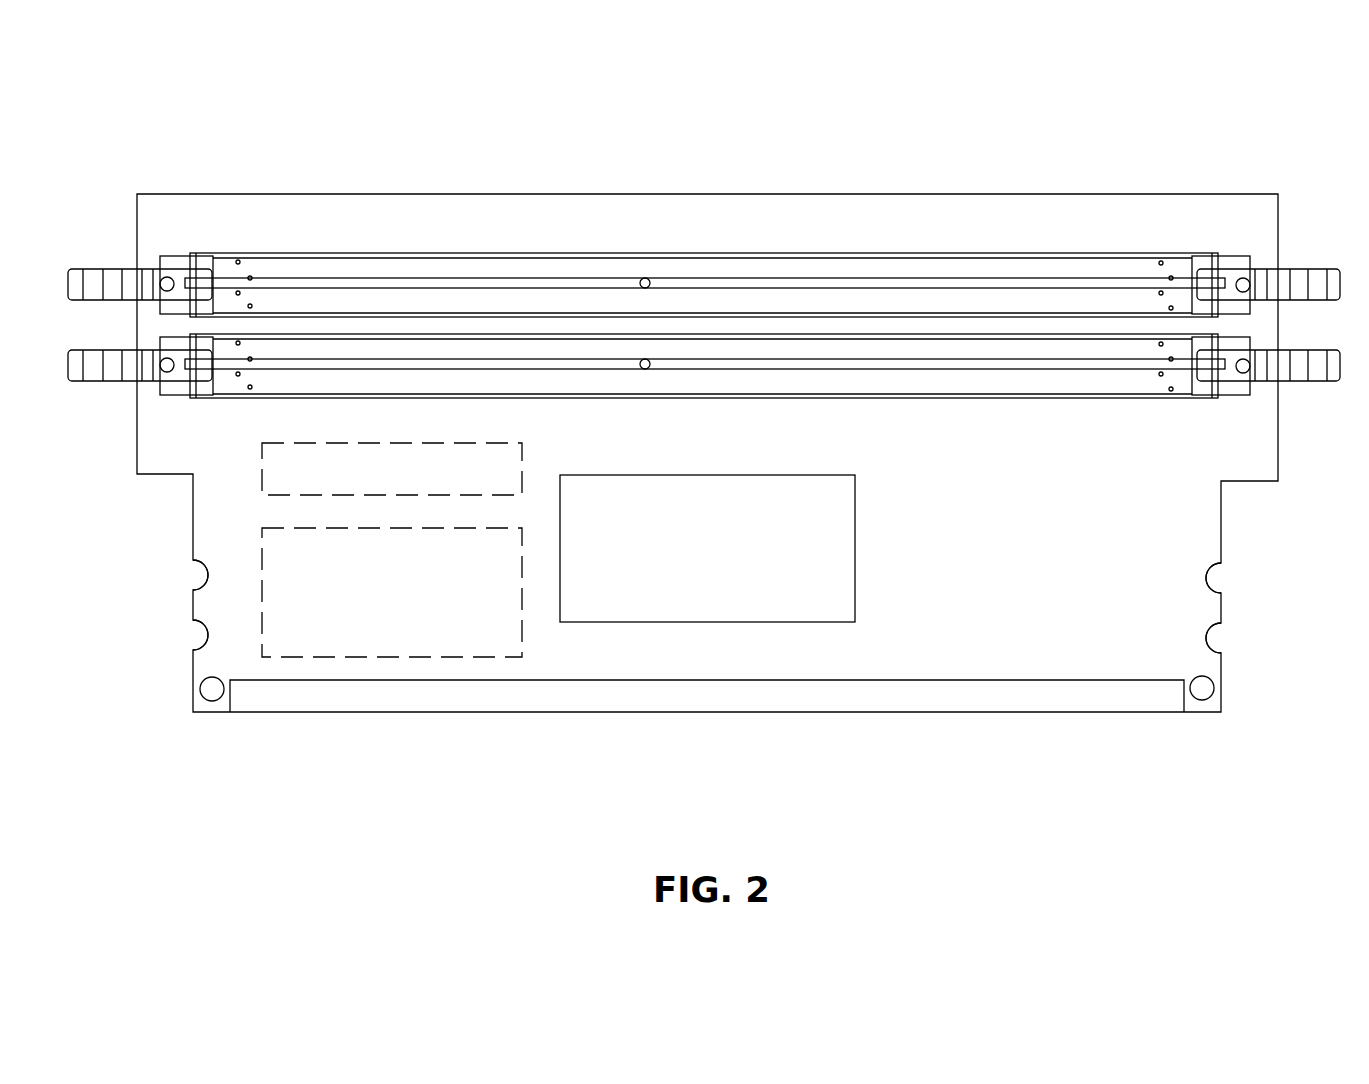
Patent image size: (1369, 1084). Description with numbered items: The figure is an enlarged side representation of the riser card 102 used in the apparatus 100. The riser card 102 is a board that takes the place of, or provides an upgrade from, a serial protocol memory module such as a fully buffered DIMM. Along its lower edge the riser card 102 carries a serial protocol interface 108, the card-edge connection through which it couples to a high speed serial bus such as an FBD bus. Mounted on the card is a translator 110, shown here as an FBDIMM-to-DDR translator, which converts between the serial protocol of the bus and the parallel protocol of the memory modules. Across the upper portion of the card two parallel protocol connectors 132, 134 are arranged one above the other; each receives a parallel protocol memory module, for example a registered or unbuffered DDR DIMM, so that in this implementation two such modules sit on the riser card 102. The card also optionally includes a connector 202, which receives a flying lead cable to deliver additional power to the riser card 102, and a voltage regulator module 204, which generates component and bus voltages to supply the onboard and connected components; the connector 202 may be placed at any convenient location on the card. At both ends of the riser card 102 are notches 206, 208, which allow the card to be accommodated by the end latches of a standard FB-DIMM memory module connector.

The apparatus 100 is at (286, 837).
The riser card 102 is at (213, 517).
The serial protocol interface 108 is at (1117, 703).
The translator 110 is at (707, 548).
The parallel protocol connector 132 is at (962, 423).
The parallel protocol connector 134 is at (942, 240).
The connector 202 is at (392, 469).
The voltage regulator module 204 is at (392, 592).
The notch 206 is at (1265, 650).
The notch 208 is at (148, 648).